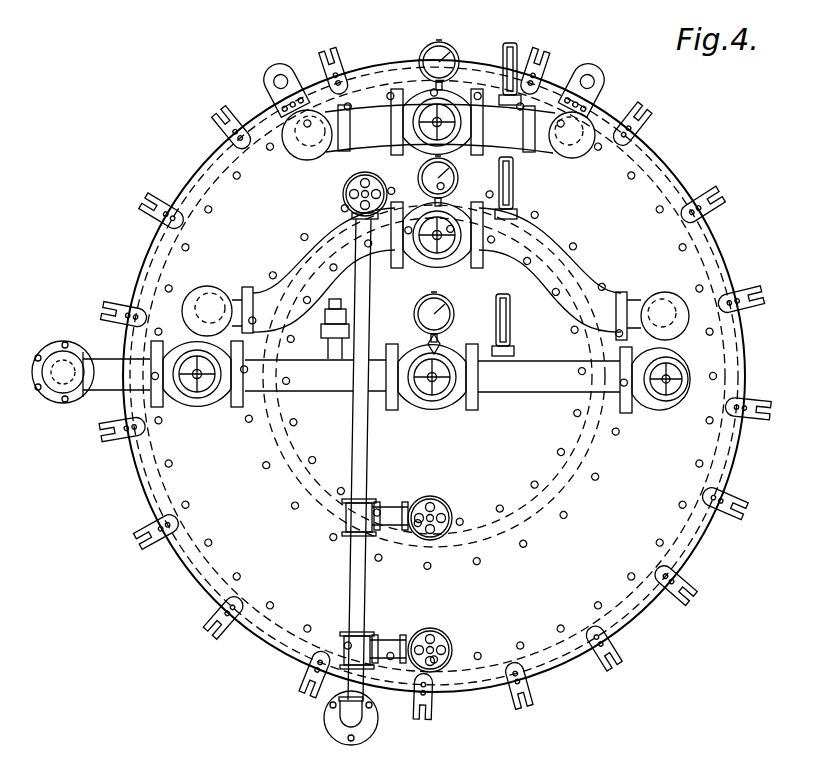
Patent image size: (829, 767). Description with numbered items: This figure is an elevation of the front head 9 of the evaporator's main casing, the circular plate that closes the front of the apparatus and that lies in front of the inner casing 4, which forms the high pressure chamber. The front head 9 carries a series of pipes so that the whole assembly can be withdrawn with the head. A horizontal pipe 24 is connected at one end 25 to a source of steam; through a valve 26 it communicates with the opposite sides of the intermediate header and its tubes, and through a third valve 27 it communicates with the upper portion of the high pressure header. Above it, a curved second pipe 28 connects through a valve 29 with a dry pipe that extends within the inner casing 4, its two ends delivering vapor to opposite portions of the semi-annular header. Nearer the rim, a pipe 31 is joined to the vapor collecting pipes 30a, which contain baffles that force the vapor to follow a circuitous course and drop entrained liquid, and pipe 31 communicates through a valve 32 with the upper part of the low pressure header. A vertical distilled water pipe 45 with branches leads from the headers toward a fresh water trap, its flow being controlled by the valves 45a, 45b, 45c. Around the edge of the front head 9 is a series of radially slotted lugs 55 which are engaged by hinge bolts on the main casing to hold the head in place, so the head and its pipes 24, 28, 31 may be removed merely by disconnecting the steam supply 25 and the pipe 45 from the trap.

The inner casing 4 is at (580, 457).
The front head 9 is at (230, 197).
The pipe 24 is at (318, 380).
The steam supply connection 25 is at (112, 373).
The valve 26 is at (192, 398).
The third valve 27 is at (450, 350).
The second pipe 28 is at (306, 280).
The valve 29 is at (419, 323).
The vapor collecting pipe 30a is at (306, 142).
The pipe 31 is at (375, 133).
The valve 32 is at (421, 144).
The distilled water pipe 45 is at (387, 517).
The valve 45a is at (347, 193).
The valve 45b is at (433, 517).
The valve 45c is at (425, 652).
The radially slotted lugs 55 is at (340, 68).